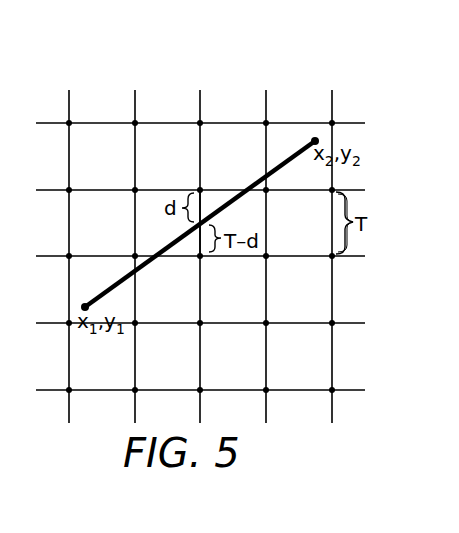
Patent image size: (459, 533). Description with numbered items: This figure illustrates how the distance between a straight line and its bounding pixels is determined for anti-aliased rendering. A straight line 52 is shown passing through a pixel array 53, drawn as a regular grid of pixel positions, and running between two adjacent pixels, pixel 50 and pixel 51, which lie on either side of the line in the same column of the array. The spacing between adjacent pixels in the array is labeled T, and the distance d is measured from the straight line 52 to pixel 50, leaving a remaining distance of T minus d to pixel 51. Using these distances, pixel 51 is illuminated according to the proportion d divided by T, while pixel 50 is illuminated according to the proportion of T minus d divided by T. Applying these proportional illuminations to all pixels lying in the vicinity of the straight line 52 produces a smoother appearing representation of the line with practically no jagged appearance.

The pixel 50 is at (204, 189).
The pixel 51 is at (203, 259).
The straight line 52 is at (293, 152).
The pixel array 53 is at (284, 53).